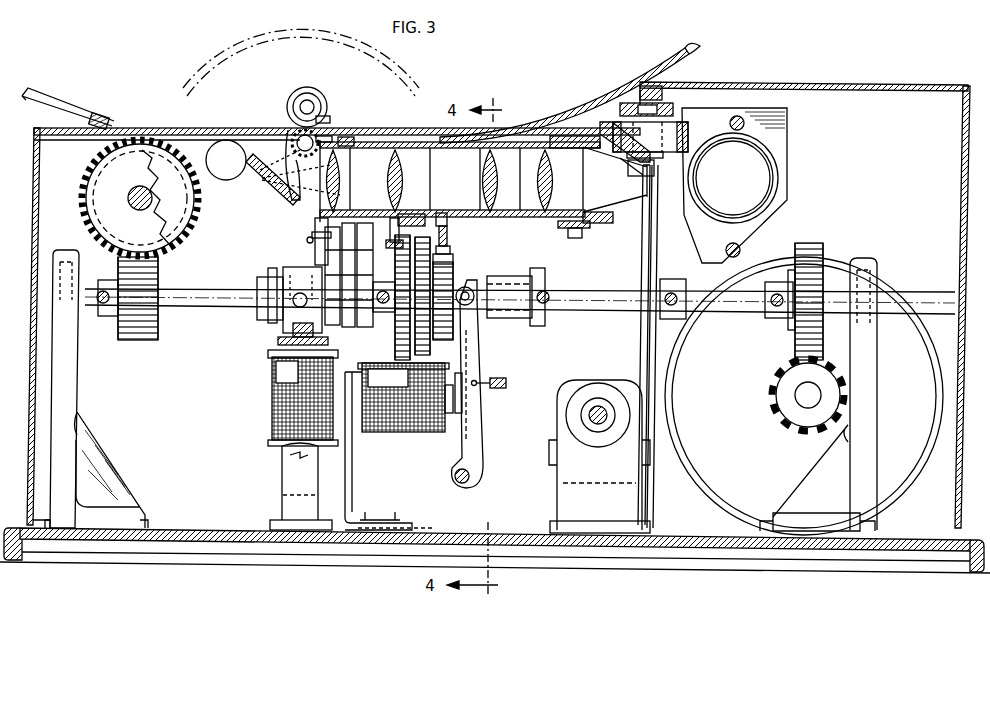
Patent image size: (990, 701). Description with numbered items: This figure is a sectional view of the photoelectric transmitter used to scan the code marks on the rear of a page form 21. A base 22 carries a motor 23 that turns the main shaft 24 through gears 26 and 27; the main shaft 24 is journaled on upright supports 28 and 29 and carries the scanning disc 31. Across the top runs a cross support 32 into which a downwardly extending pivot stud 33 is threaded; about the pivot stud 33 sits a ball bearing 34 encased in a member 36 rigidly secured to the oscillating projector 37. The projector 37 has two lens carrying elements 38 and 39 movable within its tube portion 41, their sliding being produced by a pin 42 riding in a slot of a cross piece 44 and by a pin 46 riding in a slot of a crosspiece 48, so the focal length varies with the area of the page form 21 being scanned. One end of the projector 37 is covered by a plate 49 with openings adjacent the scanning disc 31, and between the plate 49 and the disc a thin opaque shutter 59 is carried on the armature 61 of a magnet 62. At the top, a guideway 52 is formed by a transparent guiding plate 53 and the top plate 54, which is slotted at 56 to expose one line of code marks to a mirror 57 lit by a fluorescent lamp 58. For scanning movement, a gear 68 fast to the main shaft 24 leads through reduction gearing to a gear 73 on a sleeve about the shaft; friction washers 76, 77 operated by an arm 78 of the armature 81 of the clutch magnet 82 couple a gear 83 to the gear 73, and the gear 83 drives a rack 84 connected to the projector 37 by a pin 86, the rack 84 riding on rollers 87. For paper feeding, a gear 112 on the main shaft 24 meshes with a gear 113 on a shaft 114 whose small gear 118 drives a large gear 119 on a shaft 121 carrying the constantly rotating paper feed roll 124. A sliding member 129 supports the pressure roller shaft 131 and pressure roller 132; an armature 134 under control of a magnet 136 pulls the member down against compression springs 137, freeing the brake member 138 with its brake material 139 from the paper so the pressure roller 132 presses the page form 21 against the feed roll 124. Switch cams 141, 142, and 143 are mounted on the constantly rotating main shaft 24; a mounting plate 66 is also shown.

The page form 21 is at (668, 66).
The base 22 is at (436, 533).
The motor 23 is at (892, 302).
The main shaft 24 is at (228, 302).
The gear 26 is at (790, 400).
The gear 27 is at (810, 254).
The upright support 28 is at (79, 410).
The upright support 29 is at (878, 390).
The scanning disc 31 is at (656, 228).
The cross support 32 is at (675, 110).
The pivot stud 33 is at (664, 92).
The ball bearing 34 is at (585, 136).
The member 36 is at (690, 134).
The oscillating projector 37 is at (428, 140).
The lens carrying element 38 is at (402, 150).
The lens carrying element 39 is at (510, 148).
The tube portion 41 is at (510, 148).
The pin 42 is at (413, 214).
The cross piece 44 is at (397, 228).
The pin 46 is at (575, 240).
The crosspiece 48 is at (581, 230).
The plate 49 is at (650, 170).
The guideway 52 is at (166, 119).
The guiding plate 53 is at (128, 119).
The top plate 54 is at (80, 137).
The slot 56 is at (290, 140).
The mirror 57 is at (270, 196).
The fluorescent lamp 58 is at (228, 140).
The shutter 59 is at (640, 337).
The armature 61 is at (603, 386).
The magnet 62 is at (582, 392).
The mounting plate 66 is at (778, 172).
The gear 68 is at (395, 266).
The gear 73 is at (398, 342).
The friction washer 76 is at (440, 340).
The friction washer 77 is at (472, 306).
The arm 78 is at (483, 358).
The armature 81 is at (458, 405).
The clutch magnet 82 is at (405, 432).
The gear 83 is at (453, 260).
The rack 84 is at (450, 250).
The pin 86 is at (443, 213).
The roller 87 is at (447, 232).
The gear 112 is at (143, 336).
The gear 113 is at (172, 250).
The shaft 114 is at (128, 202).
The small gear 118 is at (152, 165).
The large gear 119 is at (198, 215).
The shaft 121 is at (328, 136).
The paper feed roll 124 is at (326, 116).
The member 129 is at (315, 228).
The pressure roller shaft 131 is at (302, 100).
The pressure roller 132 is at (310, 90).
The armature 134 is at (278, 342).
The magnet 136 is at (272, 406).
The compression spring 137 is at (283, 275).
The brake member 138 is at (341, 158).
The brake material 139 is at (352, 137).
The switch cam 141 is at (360, 322).
The switch cam 142 is at (372, 378).
The switch cam 143 is at (310, 378).